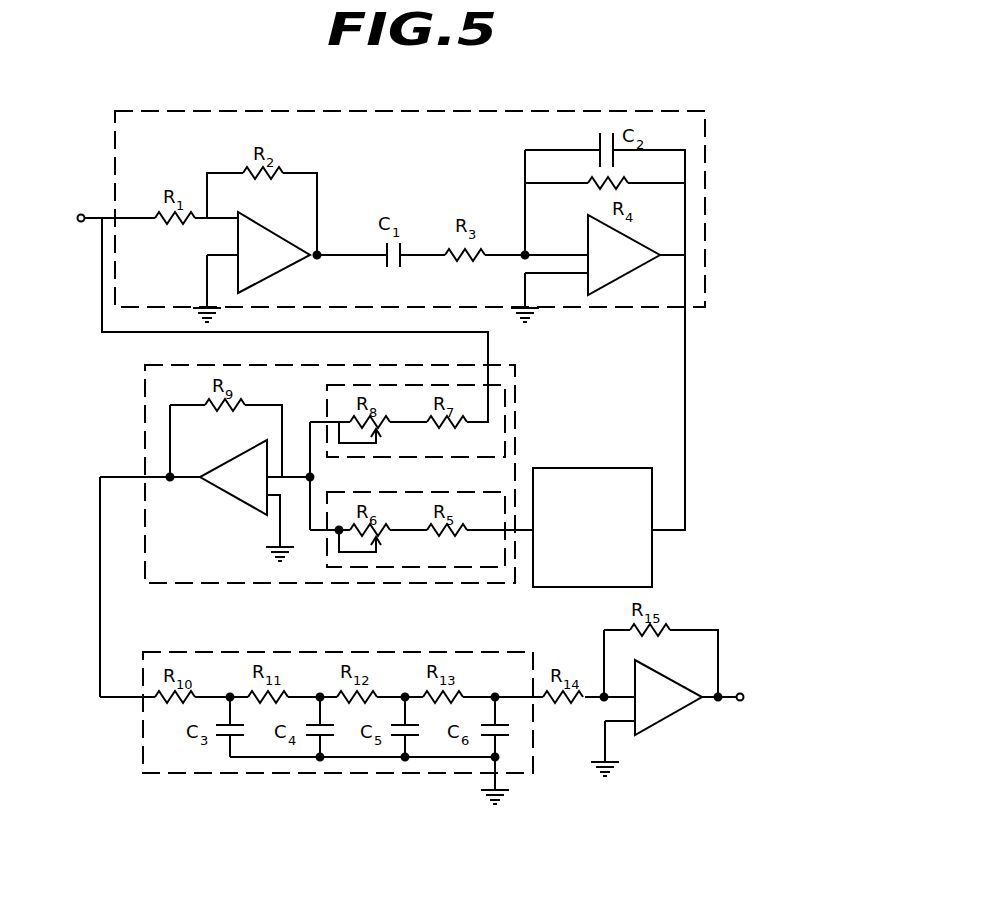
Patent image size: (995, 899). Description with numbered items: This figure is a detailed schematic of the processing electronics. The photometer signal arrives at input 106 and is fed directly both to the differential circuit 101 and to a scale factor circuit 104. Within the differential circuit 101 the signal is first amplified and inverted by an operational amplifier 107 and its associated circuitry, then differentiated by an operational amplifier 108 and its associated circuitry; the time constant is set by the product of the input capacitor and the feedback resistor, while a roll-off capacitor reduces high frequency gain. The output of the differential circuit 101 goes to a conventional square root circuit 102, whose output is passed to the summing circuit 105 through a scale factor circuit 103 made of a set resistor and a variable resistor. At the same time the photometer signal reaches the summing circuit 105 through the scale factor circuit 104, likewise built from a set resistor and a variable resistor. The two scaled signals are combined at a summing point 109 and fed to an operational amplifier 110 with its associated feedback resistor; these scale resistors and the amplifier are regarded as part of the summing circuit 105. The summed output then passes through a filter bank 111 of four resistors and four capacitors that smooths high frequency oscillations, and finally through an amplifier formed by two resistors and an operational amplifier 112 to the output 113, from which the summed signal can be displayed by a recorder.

The differential circuit 101 is at (197, 111).
The square root circuit 102 is at (610, 538).
The scale factor circuit 103 is at (400, 568).
The scale factor circuit 104 is at (507, 414).
The summing circuit 105 is at (193, 583).
The input 106 is at (57, 218).
The operational amplifier 107 is at (285, 267).
The operational amplifier 108 is at (635, 267).
The summing point 109 is at (314, 477).
The operational amplifier 110 is at (233, 477).
The filter bank 111 is at (200, 773).
The operational amplifier 112 is at (678, 709).
The output 113 is at (744, 697).